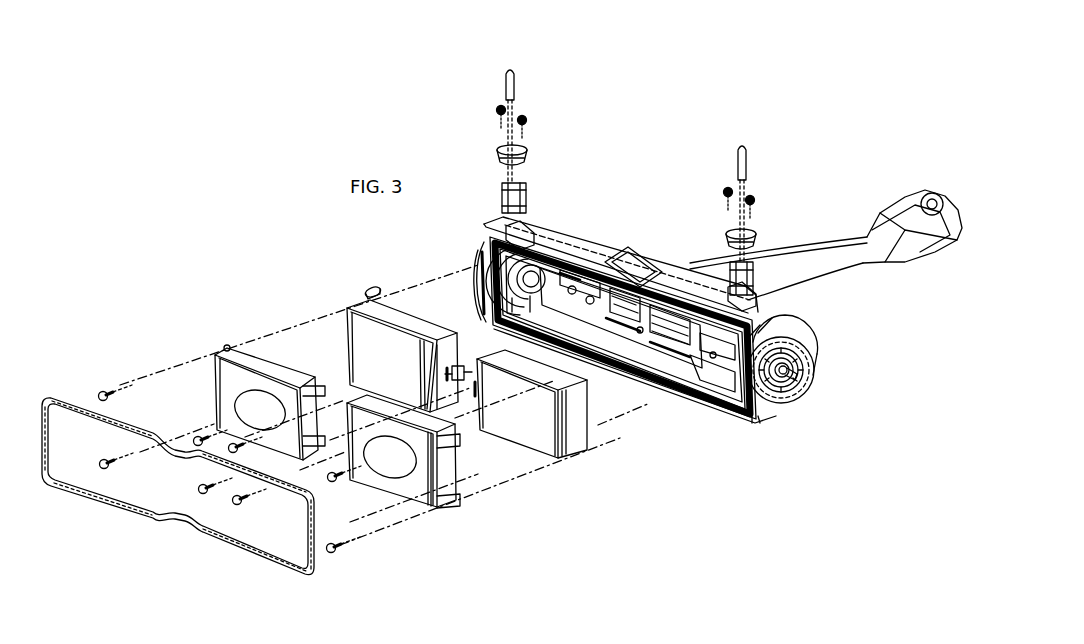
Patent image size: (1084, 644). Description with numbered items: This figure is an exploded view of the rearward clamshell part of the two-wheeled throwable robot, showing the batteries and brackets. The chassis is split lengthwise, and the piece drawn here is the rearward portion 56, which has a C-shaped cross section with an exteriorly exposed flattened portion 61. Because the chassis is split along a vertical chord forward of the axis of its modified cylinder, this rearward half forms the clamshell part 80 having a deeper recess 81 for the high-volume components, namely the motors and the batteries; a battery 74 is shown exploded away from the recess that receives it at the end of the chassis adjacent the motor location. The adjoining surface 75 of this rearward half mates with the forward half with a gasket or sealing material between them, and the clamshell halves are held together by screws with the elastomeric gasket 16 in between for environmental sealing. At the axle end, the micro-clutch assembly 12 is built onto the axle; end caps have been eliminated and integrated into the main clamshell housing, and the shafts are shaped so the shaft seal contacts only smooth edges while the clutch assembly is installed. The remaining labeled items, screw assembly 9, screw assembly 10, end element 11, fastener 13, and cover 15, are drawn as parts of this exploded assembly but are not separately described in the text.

The screw assembly 9 is at (753, 238).
The screw assembly 10 is at (527, 192).
The end knob 11 is at (536, 275).
The micro-clutch assembly 12 is at (789, 376).
The fastener 13 is at (368, 290).
The cover with window 15 is at (443, 493).
The elastomeric gasket 16 is at (68, 395).
The rearward portion 56 is at (591, 257).
The exteriorly exposed flattened portion 61 is at (735, 386).
The battery 74 is at (575, 425).
The adjoining surface 75 is at (740, 416).
The clamshell part 80 is at (561, 236).
The deeper recess 81 is at (709, 381).